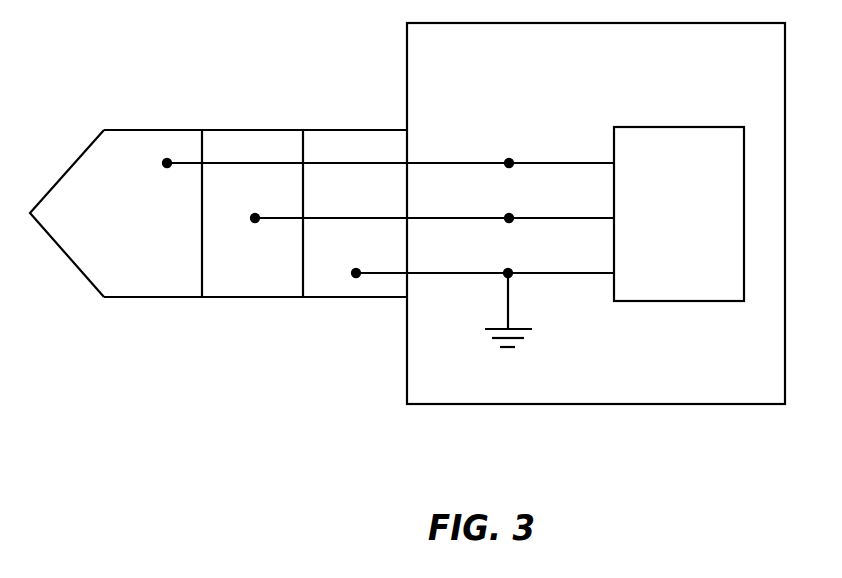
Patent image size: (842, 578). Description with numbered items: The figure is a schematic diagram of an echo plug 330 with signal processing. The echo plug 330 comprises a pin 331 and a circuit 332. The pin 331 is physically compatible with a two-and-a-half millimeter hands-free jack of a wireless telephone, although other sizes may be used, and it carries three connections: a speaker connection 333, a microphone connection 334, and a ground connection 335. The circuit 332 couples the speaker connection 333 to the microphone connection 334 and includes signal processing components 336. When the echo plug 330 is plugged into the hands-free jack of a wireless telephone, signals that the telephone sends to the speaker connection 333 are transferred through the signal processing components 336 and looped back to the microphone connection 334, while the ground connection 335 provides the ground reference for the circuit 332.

The echo plug 330 is at (626, 101).
The pin 331 is at (199, 100).
The circuit 332 is at (548, 216).
The speaker connection 333 is at (165, 168).
The microphone connection 334 is at (258, 216).
The ground connection 335 is at (356, 278).
The signal processing components 336 is at (657, 290).